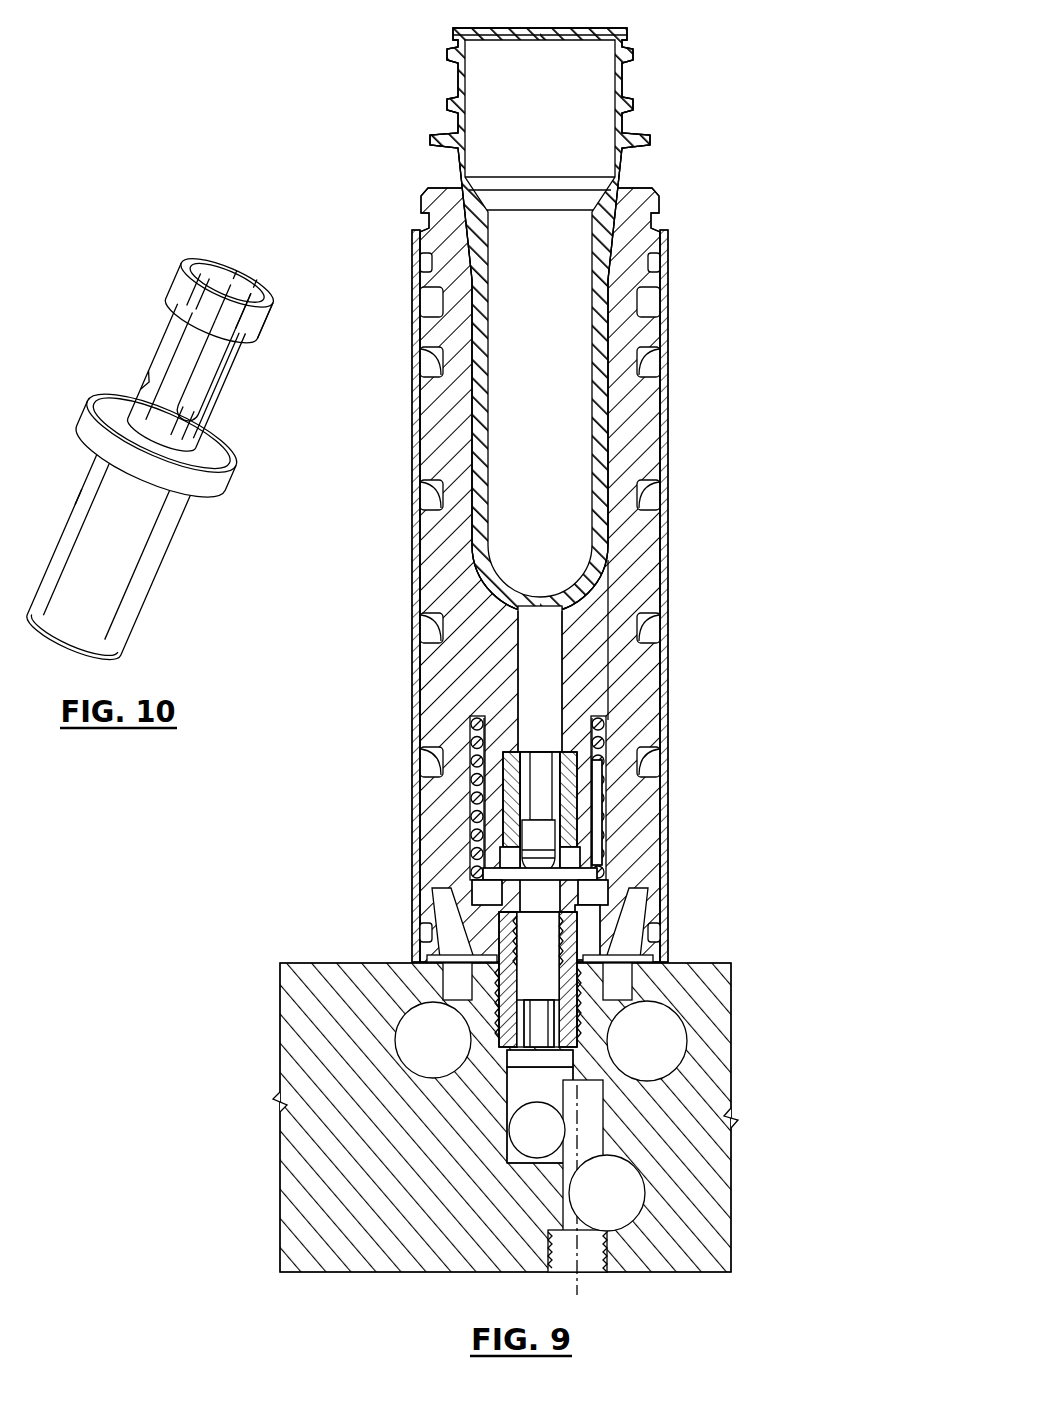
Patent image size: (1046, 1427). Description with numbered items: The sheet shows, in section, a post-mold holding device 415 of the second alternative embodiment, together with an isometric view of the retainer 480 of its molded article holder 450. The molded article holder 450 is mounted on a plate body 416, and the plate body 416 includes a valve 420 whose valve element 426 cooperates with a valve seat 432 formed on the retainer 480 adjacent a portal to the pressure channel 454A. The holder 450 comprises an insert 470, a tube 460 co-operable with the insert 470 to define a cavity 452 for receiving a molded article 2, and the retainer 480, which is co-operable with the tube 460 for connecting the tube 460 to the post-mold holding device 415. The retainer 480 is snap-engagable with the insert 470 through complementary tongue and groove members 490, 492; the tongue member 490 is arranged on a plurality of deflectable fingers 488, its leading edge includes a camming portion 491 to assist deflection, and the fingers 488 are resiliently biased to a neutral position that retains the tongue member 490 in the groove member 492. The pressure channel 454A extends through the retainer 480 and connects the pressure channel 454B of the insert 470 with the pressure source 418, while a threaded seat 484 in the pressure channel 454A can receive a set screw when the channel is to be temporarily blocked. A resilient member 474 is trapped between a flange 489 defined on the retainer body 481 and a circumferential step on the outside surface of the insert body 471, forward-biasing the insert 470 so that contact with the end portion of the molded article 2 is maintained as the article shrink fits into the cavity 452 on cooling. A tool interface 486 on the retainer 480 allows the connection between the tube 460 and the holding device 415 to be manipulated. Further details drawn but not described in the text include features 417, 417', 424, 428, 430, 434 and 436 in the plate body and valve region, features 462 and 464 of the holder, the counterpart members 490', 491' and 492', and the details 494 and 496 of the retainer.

In FIG. 9, the molded article 2 is at (632, 63).
In FIG. 9, the post-mold holding device 415 is at (793, 1069).
In FIG. 9, the plate body 416 is at (702, 1230).
In FIG. 9, the inlet passage 417 is at (433, 1040).
In FIG. 9, the counterbore 417' is at (481, 962).
In FIG. 9, the pressure source 418 is at (583, 1208).
In FIG. 9, the valve 420 is at (510, 1173).
In FIG. 9, the valve seat 424 is at (503, 1187).
In FIG. 9, the valve element 426 is at (515, 1145).
In FIG. 9, the cavity 428 is at (590, 1092).
In FIG. 9, the shoulder 430 is at (520, 1112).
In FIG. 9, the valve seat 432 is at (500, 1058).
In FIG. 9, the stem passage 434 is at (590, 1135).
In FIG. 9, the side wall 436 is at (520, 1098).
In FIG. 9, the molded article holder 450 is at (633, 575).
In FIG. 9, the cavity 452 is at (477, 452).
In FIG. 9, the pressure channel 454A is at (540, 762).
In FIG. 10, the pressure channel 454A is at (247, 258).
In FIG. 9, the pressure channel 454B is at (530, 682).
In FIG. 9, the tube 460 is at (662, 403).
In FIG. 9, the ferrule 462 is at (443, 918).
In FIG. 9, the outer sleeve 464 is at (668, 445).
In FIG. 9, the insert 470 is at (622, 672).
In FIG. 9, the insert body 471 is at (583, 637).
In FIG. 9, the resilient member 474 is at (598, 792).
In FIG. 9, the retainer 480 is at (586, 936).
In FIG. 10, the retainer 480 is at (218, 547).
In FIG. 9, the retainer body 481 is at (582, 898).
In FIG. 10, the retainer body 481 is at (125, 585).
In FIG. 9, the threaded seat 484 is at (553, 1028).
In FIG. 9, the tool interface 486 is at (590, 1058).
In FIG. 9, the fingers 488 is at (590, 830).
In FIG. 10, the fingers 488 is at (232, 380).
In FIG. 9, the flange 489 is at (600, 872).
In FIG. 10, the flange 489 is at (210, 480).
In FIG. 9, the tongue member 490 is at (679, 792).
In FIG. 10, the tongue member 490 is at (242, 278).
In FIG. 9, the second spring 490' is at (403, 798).
In FIG. 10, the camming portion 491 is at (306, 303).
In FIG. 9, the retainer 491' is at (460, 884).
In FIG. 9, the groove member 492 is at (440, 813).
In FIG. 9, the first finger 492' is at (422, 810).
In FIG. 10, the first finger 492' is at (166, 369).
In FIG. 10, the slot 494 is at (163, 402).
In FIG. 10, the relief hole 496 is at (200, 413).